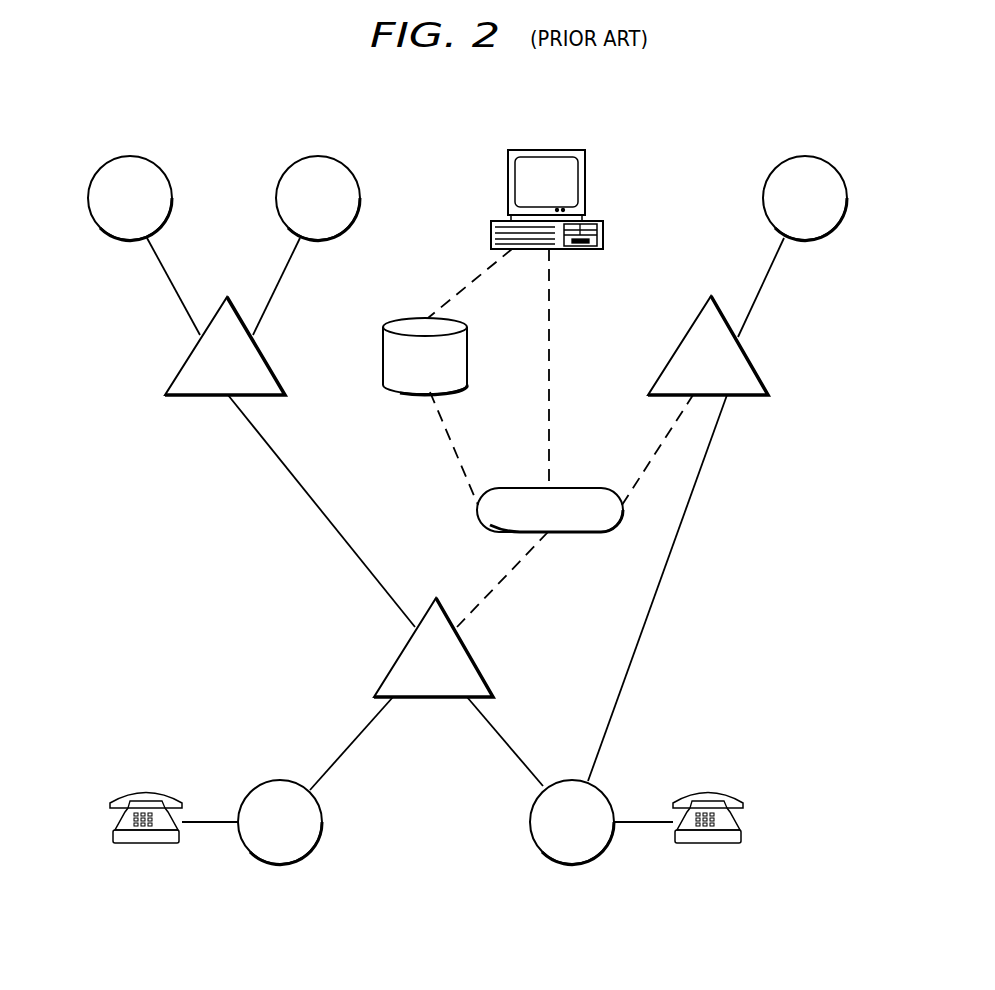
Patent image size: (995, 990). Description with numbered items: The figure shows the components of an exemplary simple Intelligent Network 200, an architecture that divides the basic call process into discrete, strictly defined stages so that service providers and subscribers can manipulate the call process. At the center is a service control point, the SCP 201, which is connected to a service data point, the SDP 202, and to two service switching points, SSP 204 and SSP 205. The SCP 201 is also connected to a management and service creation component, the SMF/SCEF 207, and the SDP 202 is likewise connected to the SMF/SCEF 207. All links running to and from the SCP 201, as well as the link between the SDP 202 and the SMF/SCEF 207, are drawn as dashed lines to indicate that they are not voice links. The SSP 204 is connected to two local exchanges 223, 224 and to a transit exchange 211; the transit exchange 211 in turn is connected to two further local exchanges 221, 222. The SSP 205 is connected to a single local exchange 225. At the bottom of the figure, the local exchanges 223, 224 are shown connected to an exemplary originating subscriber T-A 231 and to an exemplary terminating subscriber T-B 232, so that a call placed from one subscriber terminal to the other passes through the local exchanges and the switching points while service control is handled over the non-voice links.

The Intelligent Network 200 is at (98, 72).
The SCP 201 is at (568, 534).
The SDP 202 is at (382, 350).
The SSP 204 is at (425, 699).
The SSP 205 is at (744, 397).
The SMF/SCEF 207 is at (568, 130).
The transit exchange 211 is at (198, 397).
The local exchange 221 is at (118, 156).
The local exchange 222 is at (310, 156).
The local exchange 223 is at (270, 862).
The local exchange 224 is at (598, 858).
The local exchange 225 is at (812, 156).
The originating subscriber T-A 231 is at (132, 792).
The terminating subscriber T-B 232 is at (737, 772).